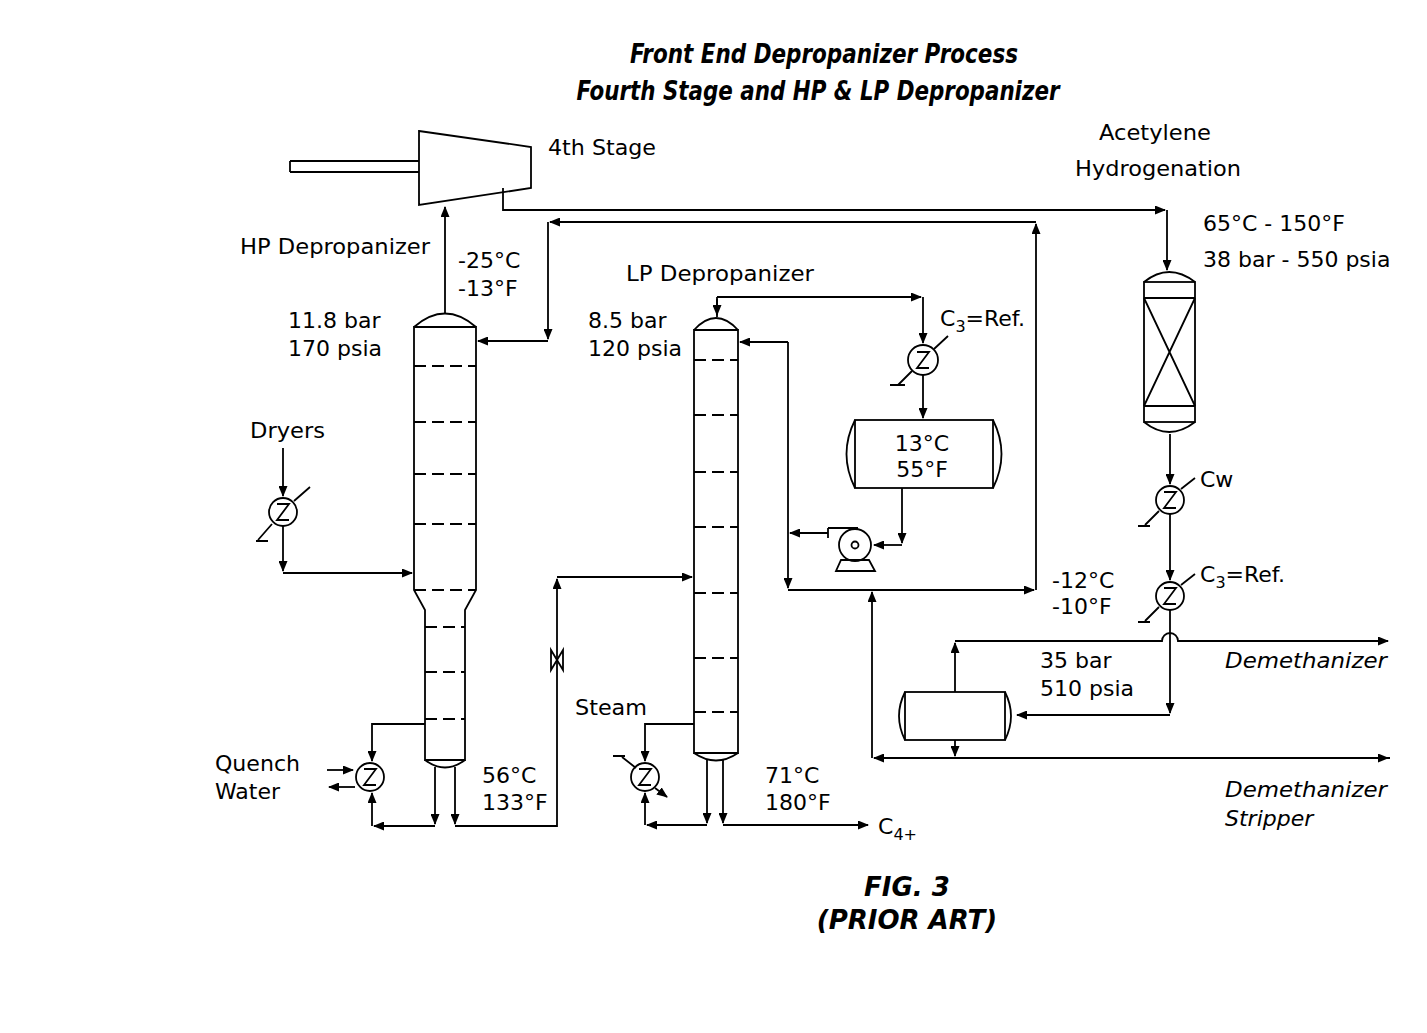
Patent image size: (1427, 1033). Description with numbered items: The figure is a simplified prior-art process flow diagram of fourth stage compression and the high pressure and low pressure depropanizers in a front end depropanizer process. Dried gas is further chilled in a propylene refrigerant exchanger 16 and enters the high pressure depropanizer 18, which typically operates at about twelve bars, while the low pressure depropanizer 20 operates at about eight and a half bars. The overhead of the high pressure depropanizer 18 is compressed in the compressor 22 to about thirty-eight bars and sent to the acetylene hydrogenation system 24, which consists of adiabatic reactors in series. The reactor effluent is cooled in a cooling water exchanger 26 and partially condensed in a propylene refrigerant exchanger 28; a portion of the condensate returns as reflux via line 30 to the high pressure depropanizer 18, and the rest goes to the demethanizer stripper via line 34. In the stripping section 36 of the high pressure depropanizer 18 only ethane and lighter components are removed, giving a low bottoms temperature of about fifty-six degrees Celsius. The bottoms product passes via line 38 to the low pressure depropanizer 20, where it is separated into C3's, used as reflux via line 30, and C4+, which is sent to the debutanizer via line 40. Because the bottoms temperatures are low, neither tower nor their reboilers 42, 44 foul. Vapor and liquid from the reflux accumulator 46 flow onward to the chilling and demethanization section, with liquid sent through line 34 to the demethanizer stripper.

The propylene refrigerant exchanger 16 is at (270, 508).
The high pressure depropanizer 18 is at (478, 541).
The low pressure depropanizer 20 is at (694, 450).
The compressor 22 is at (446, 181).
The acetylene hydrogenation system 24 is at (1196, 350).
The cooling water exchanger 26 is at (1184, 504).
The propylene refrigerant exchanger 28 is at (1184, 600).
The reflux line 30 is at (1038, 453).
The line to demethanizer stripper 34 is at (1225, 756).
The stripping section 36 is at (465, 657).
The bottoms line 38 is at (590, 576).
The C4+ line 40 is at (768, 828).
The reboiler 42 is at (360, 768).
The reboiler 44 is at (638, 790).
The reflux accumulator 46 is at (941, 728).